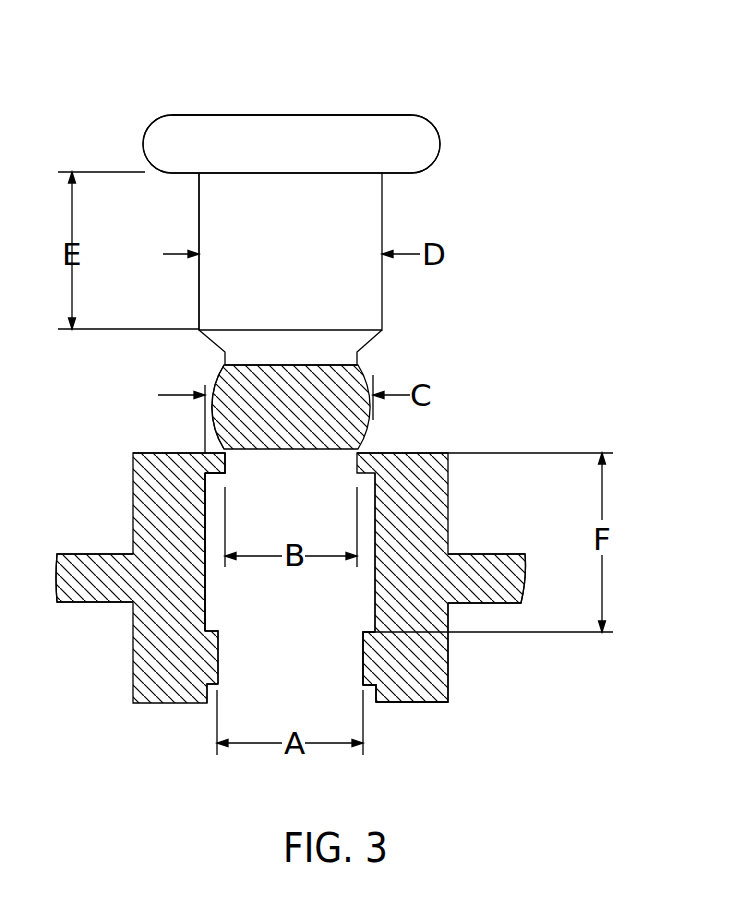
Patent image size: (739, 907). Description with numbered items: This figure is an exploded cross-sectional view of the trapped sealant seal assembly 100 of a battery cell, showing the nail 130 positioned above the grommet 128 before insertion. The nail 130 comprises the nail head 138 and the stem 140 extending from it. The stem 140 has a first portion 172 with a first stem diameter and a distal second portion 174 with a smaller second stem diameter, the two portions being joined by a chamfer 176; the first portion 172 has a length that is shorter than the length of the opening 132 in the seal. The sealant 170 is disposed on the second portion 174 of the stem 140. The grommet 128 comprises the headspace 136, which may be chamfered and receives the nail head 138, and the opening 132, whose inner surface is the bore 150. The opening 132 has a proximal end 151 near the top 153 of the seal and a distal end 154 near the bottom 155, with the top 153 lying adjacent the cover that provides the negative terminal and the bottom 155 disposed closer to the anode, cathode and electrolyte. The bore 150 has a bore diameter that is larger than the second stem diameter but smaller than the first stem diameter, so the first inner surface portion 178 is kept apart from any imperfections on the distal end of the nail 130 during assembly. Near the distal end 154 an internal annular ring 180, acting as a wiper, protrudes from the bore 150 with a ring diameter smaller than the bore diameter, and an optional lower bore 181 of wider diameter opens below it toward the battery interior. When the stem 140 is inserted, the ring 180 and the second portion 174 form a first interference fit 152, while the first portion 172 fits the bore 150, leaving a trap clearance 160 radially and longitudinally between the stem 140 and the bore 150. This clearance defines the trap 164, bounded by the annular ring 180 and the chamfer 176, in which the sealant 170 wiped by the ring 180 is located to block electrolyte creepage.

The seal assembly 100 is at (426, 84).
The nail 130 is at (277, 196).
The nail head 138 is at (185, 130).
The stem 140 is at (363, 221).
The first portion 172 is at (218, 227).
The chamfer 176 is at (223, 350).
The sealant 170 is at (366, 378).
The second portion 174 is at (240, 455).
The opening 132 is at (370, 452).
The grommet 128 is at (98, 590).
The top 153 is at (358, 483).
The proximal end 151 is at (377, 474).
The first inner surface portion 178 is at (203, 512).
The bore 150 is at (377, 500).
The trap clearance 160 is at (240, 580).
The headspace 136 is at (212, 463).
The trap 164 is at (416, 645).
The distal end 154 is at (360, 665).
The internal annular ring 180 is at (375, 680).
The first interference fit 152 is at (230, 655).
The lower bore 181 is at (203, 705).
The bottom 155 is at (398, 704).